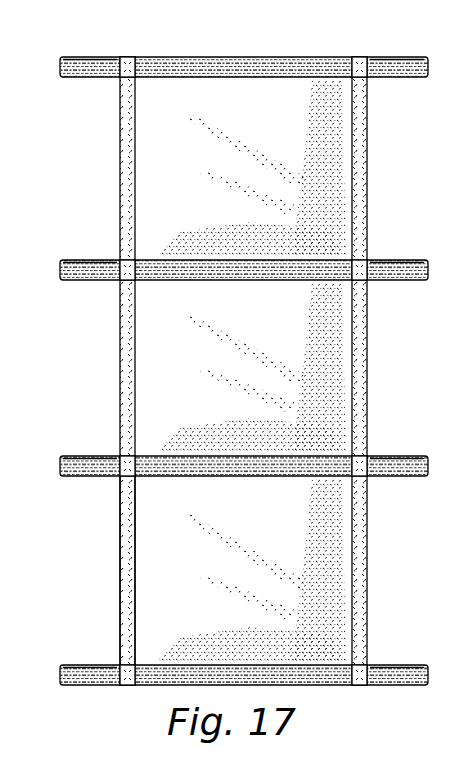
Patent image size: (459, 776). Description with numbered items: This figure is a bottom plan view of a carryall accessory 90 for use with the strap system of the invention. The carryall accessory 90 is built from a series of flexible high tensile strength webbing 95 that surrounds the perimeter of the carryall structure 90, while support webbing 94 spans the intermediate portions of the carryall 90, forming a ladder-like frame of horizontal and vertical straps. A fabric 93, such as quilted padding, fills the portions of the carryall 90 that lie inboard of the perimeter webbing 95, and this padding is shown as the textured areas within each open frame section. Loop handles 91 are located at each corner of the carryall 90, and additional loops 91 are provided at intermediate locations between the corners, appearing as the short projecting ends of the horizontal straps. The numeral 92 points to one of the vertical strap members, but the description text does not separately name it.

The carryall accessory 90 is at (120, 704).
The loop handles 91 is at (62, 56).
The vertical post 92 is at (122, 78).
The fabric 93 is at (148, 210).
The support webbing 94 is at (163, 272).
The flexible high tensile strength webbing 95 is at (128, 642).